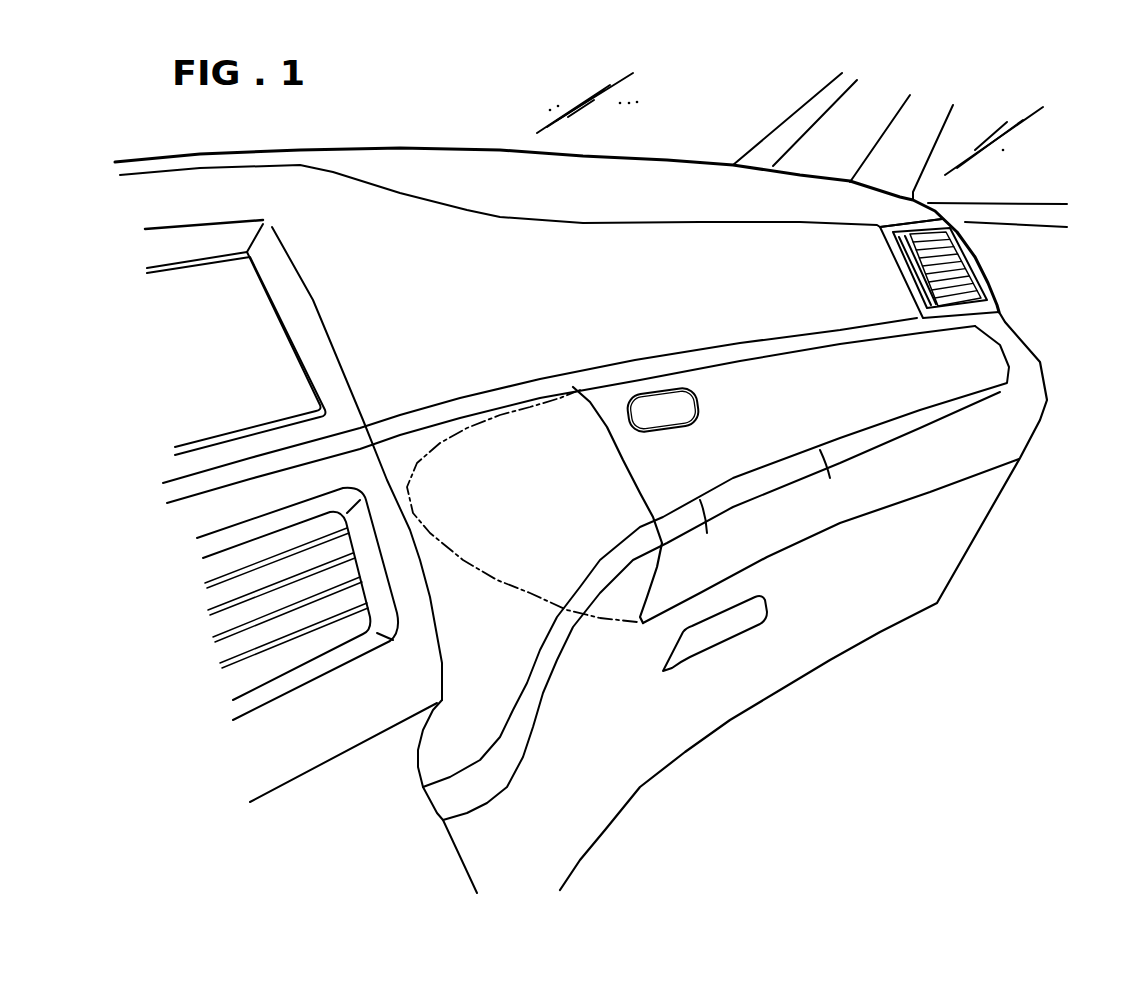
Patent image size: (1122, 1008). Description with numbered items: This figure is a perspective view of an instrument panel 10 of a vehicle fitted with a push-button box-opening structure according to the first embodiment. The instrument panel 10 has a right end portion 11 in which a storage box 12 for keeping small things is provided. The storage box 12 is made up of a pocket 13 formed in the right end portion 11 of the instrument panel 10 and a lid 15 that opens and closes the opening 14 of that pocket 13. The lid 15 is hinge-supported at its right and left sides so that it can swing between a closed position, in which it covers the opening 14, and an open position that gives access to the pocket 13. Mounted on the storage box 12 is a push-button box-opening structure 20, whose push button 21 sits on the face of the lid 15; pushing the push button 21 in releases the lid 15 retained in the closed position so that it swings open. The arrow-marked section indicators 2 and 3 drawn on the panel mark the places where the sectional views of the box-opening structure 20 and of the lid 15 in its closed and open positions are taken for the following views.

The instrument panel 10 is at (479, 140).
The right end portion 11 is at (812, 250).
The storage box 12 is at (1013, 337).
The pocket 13 is at (499, 451).
The opening 14 is at (569, 391).
The lid 15 is at (867, 355).
The push-button box-opening structure 20 is at (612, 428).
The push button 21 is at (714, 409).
The section line for FIG. 2 is at (633, 350).
The section line for FIG. 3 is at (770, 332).